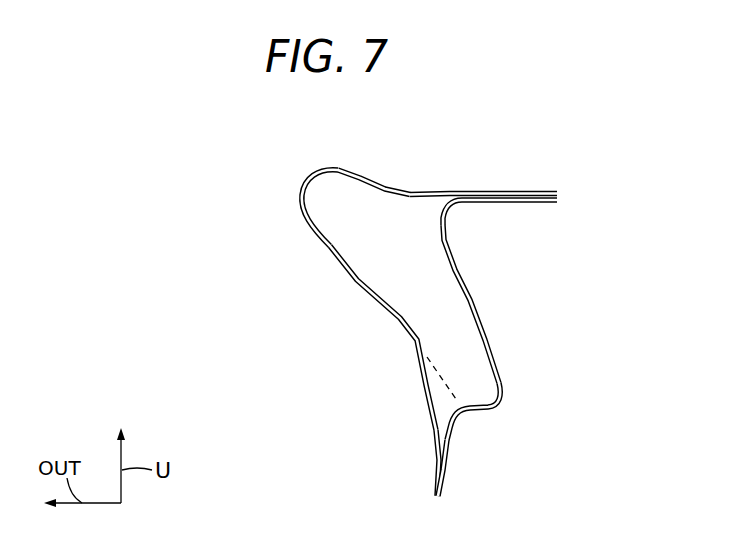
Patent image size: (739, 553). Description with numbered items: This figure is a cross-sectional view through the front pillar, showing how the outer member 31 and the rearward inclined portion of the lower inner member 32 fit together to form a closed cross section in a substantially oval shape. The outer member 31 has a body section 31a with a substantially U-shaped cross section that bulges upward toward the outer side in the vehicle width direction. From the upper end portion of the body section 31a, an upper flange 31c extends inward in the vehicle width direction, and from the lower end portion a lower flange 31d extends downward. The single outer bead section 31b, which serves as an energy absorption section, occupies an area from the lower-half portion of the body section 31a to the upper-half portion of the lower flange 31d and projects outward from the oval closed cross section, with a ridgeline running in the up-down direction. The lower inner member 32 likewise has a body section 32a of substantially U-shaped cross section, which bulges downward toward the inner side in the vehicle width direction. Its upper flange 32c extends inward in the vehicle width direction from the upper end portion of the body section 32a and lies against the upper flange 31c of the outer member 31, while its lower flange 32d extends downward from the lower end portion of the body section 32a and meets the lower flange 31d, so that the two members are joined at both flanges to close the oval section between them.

The outer member 31 is at (378, 299).
The body section 31a is at (322, 168).
The outer bead section 31b is at (420, 397).
The upper flange 31c is at (503, 189).
The lower flange 31d is at (434, 477).
The lower inner member 32 is at (513, 353).
The body section 32a is at (508, 403).
The upper flange 32c is at (502, 203).
The lower flange 32d is at (449, 482).